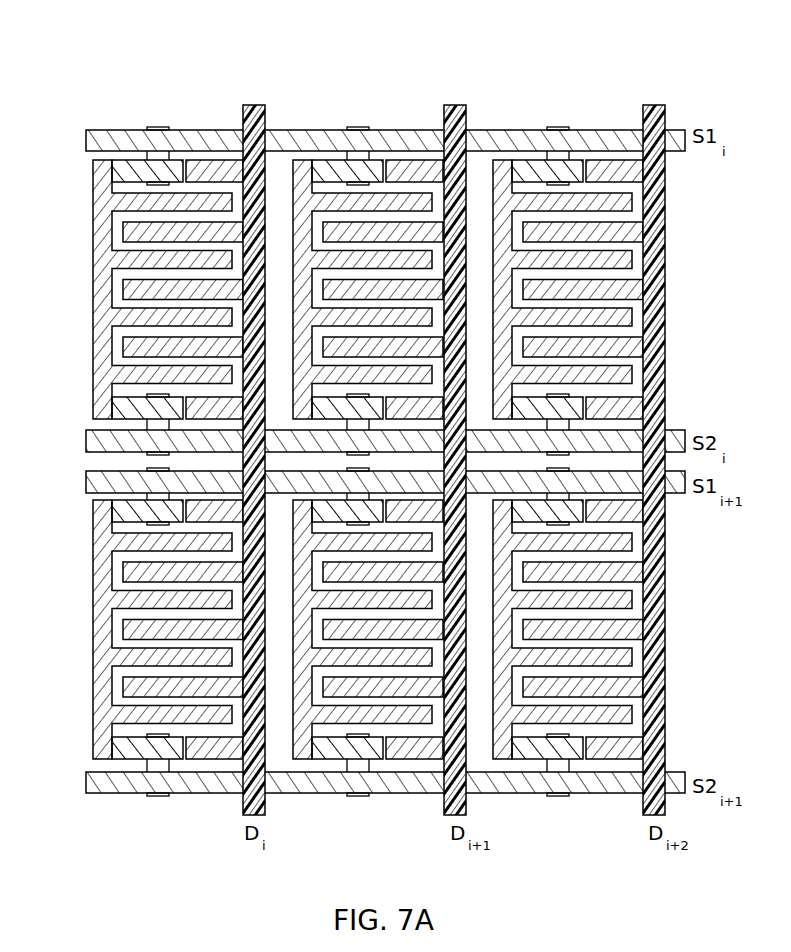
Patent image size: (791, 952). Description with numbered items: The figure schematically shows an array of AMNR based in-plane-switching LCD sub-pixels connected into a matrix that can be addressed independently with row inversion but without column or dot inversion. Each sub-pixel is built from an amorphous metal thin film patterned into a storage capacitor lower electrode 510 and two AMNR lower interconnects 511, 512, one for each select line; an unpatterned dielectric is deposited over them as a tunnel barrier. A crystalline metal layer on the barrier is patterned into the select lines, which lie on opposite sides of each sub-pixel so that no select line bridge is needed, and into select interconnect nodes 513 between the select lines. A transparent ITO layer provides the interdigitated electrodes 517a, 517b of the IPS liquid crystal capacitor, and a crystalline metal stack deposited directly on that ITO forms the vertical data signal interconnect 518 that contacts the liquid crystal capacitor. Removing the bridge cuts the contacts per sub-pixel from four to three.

The storage capacitor lower electrode 510 is at (640, 718).
The AMNR lower interconnect 511 is at (150, 454).
The AMNR lower interconnect 512 is at (156, 127).
The select interconnect node 513 is at (181, 130).
The electrode of IPS liquid crystal capacitor 517a is at (638, 176).
The electrode of IPS liquid crystal capacitor 517b is at (100, 130).
The data signal interconnect 518 is at (249, 103).